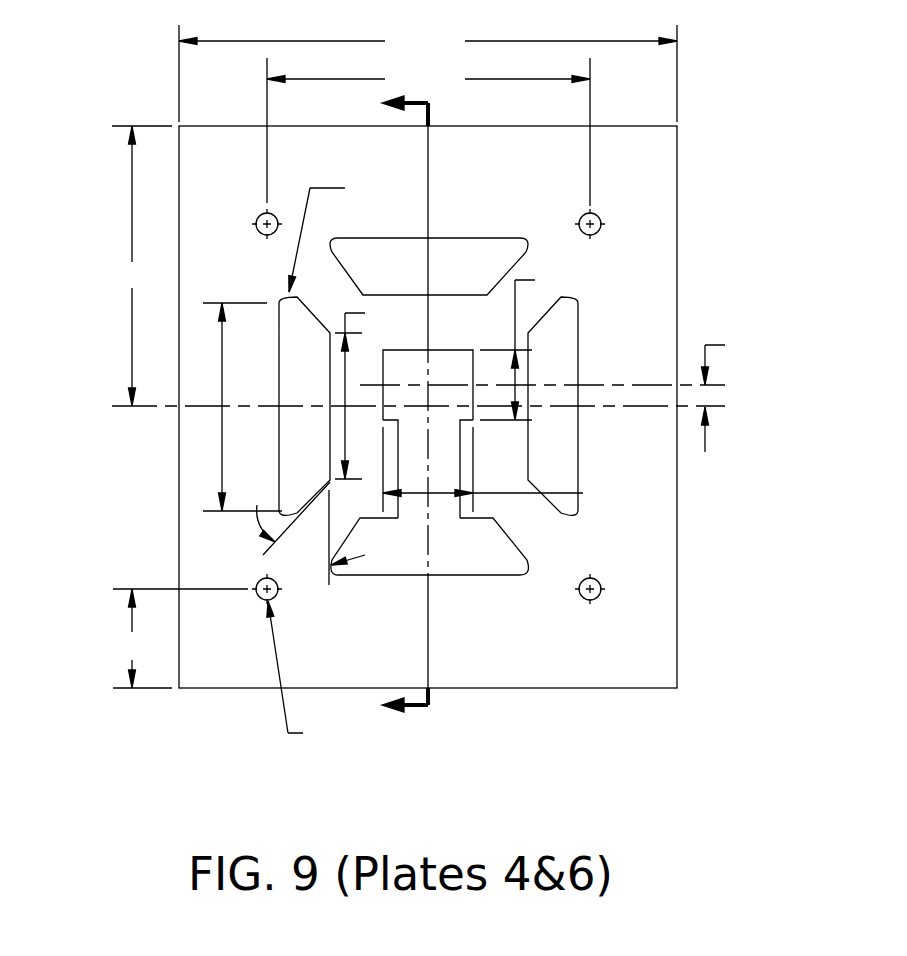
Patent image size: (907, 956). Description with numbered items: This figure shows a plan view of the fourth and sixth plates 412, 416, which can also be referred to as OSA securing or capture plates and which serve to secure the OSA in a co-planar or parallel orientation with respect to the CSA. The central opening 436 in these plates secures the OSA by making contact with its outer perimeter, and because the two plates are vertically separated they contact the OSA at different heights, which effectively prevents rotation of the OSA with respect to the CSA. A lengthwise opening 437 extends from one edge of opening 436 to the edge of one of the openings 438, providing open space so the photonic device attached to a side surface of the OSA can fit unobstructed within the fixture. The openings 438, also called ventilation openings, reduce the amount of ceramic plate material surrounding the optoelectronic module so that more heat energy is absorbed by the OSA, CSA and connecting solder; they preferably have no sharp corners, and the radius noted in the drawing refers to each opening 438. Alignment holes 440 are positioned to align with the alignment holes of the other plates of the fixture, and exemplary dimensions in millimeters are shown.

The plate 4 412 is at (502, 387).
The plate 6 416 is at (444, 387).
The opening 436 is at (458, 350).
The lengthwise opening 437 is at (462, 462).
The ventilation openings 438 is at (282, 330).
The alignment holes 440 is at (597, 596).